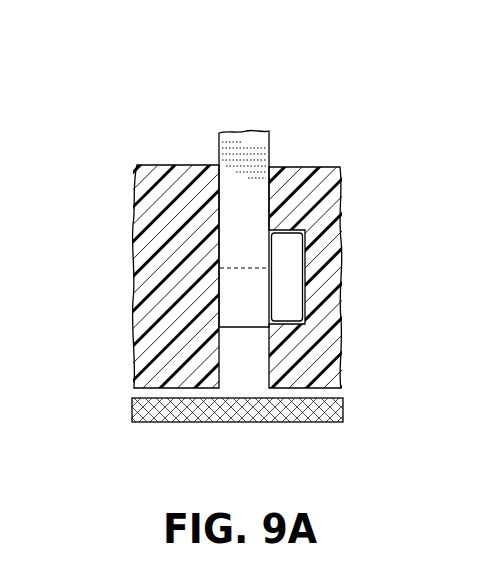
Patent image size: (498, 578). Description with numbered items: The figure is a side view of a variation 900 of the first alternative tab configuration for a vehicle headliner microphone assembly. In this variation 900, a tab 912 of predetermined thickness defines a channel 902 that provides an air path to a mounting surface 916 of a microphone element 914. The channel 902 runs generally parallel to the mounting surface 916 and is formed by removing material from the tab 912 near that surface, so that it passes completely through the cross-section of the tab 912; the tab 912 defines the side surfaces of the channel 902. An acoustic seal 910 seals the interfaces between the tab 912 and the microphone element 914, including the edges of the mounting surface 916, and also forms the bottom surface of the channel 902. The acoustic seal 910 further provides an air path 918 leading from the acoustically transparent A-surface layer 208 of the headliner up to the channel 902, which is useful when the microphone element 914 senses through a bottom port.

The variation of the first alternative tab configuration 900 is at (180, 88).
The acoustic seal 910 is at (135, 281).
The tab 912 is at (218, 146).
The mounting surface 916 is at (262, 232).
The microphone element 914 is at (306, 282).
The channel 902 is at (246, 297).
The A-surface layer 208 is at (132, 410).
The air path 918 is at (247, 380).